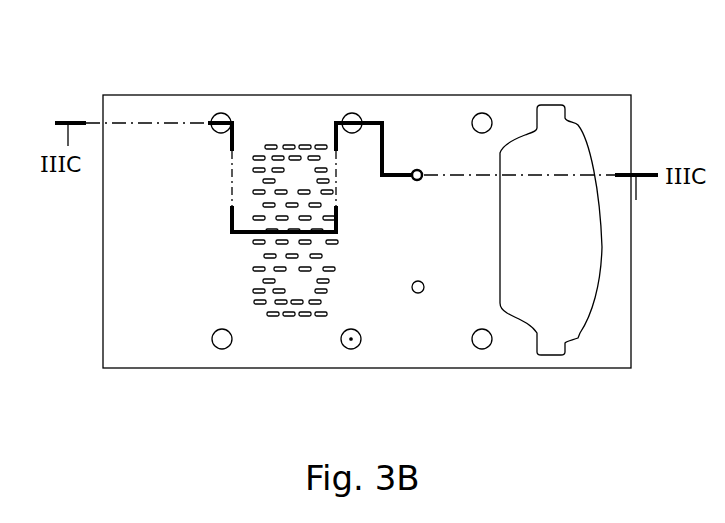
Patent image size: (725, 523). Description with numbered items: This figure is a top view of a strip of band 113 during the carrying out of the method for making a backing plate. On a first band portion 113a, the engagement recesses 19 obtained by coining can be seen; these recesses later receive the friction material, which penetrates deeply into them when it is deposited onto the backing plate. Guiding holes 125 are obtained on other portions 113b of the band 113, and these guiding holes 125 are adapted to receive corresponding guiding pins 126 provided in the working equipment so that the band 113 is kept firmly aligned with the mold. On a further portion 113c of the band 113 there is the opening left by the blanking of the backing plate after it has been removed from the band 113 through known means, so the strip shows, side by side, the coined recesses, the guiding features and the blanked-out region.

The strip of band 113 is at (572, 367).
The first band portion 113a is at (308, 103).
The band portions 113b is at (222, 103).
The band portion 113c is at (565, 155).
The guiding holes 125 is at (482, 112).
The guiding pins 126 is at (351, 349).
The engagement recesses 19 is at (299, 318).